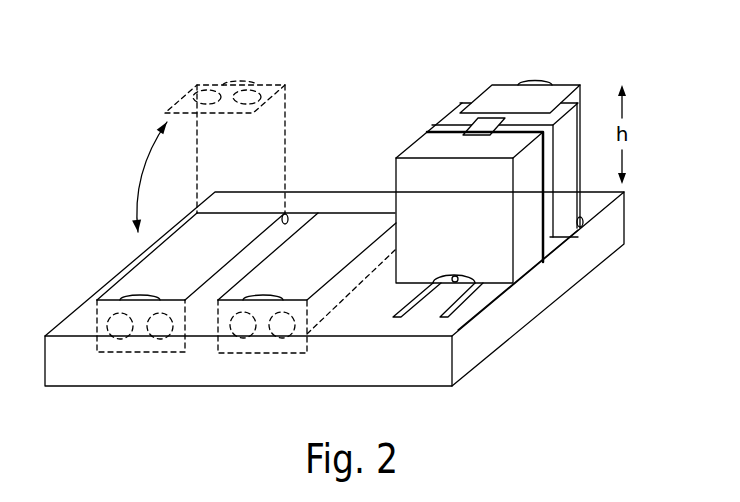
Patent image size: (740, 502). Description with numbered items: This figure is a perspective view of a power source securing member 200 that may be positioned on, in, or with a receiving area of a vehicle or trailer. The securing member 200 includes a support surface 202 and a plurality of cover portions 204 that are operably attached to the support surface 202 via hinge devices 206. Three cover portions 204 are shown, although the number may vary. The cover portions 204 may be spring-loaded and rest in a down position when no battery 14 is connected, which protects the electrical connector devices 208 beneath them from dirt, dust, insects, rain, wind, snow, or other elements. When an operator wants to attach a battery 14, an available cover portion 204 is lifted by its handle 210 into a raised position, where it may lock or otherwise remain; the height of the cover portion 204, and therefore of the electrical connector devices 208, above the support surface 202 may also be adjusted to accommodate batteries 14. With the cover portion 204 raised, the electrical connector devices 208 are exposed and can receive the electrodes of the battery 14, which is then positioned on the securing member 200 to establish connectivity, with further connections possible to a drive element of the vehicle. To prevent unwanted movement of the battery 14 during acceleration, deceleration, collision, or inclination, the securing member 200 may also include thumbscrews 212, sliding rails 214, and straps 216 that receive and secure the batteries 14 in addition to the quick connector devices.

The battery 14 is at (438, 223).
The power source securing member 200 is at (598, 296).
The support surface 202 is at (80, 322).
The cover portion 204 is at (287, 98).
The hinge device 206 is at (288, 215).
The electrical connector device 208 is at (247, 92).
The handle 210 is at (138, 297).
The thumbscrew 212 is at (457, 277).
The sliding rail 214 is at (448, 317).
The strap 216 is at (575, 237).